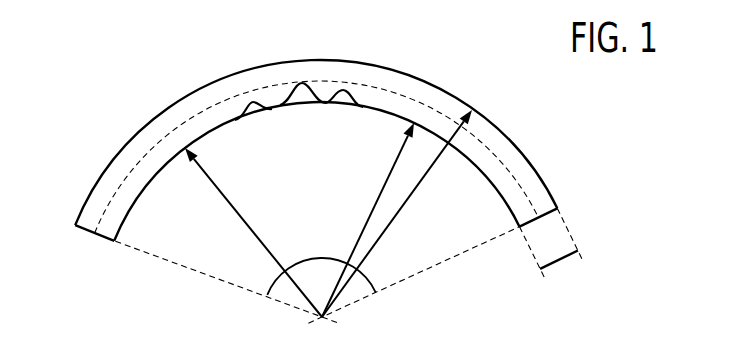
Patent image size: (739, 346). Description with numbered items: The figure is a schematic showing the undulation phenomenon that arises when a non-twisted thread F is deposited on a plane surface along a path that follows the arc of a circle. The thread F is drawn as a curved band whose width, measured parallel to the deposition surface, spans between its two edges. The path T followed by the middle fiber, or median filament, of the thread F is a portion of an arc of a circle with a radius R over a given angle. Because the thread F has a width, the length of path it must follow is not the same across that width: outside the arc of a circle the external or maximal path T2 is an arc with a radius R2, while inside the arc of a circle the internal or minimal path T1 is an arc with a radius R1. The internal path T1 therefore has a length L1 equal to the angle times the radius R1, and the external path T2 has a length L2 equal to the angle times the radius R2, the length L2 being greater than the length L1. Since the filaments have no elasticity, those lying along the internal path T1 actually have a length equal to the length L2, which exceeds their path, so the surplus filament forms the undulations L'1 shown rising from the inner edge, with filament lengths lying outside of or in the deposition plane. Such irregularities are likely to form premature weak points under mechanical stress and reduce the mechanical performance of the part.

The thread F is at (520, 166).
The external path T2 is at (166, 93).
The internal path T1 is at (140, 222).
The path of the middle fiber T is at (428, 106).
The length of the external path L2 is at (127, 143).
The length of the internal path L1 is at (152, 182).
The undulated filament length L'1 is at (299, 120).
The radius of the middle fiber path R is at (253, 232).
The radius of the internal path R1 is at (368, 220).
The radius of the external path R2 is at (397, 213).